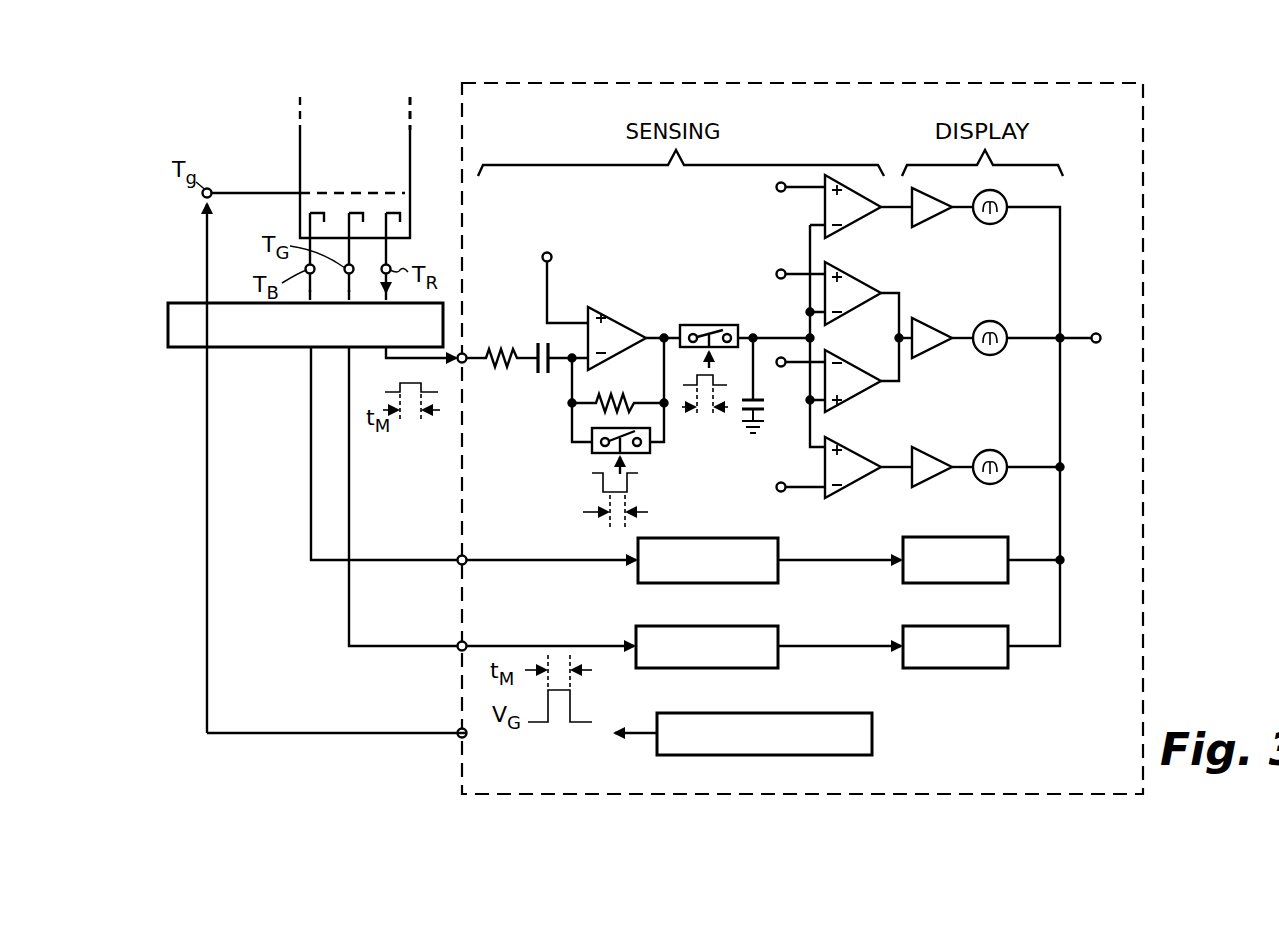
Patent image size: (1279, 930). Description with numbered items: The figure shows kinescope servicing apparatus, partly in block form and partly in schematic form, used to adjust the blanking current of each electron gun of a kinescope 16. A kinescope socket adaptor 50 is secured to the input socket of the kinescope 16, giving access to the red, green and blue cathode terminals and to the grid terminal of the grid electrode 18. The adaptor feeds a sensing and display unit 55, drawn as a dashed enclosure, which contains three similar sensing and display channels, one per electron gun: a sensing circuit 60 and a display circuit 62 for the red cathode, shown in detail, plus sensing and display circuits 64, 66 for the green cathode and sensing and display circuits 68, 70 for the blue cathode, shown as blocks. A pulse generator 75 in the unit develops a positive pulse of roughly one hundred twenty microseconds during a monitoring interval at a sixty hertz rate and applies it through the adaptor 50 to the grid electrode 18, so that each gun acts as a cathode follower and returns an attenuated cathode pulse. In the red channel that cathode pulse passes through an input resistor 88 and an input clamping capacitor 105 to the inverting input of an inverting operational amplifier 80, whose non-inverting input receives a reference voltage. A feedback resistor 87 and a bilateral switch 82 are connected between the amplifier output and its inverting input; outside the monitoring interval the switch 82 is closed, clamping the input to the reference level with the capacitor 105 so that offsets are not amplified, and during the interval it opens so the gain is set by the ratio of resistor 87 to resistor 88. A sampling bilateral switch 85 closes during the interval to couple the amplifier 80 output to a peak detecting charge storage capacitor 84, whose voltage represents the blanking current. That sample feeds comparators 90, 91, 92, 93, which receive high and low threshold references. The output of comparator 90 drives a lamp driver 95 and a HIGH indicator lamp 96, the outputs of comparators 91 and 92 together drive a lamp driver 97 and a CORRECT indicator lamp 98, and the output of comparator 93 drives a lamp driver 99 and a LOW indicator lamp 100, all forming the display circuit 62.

The kinescope 16 is at (300, 150).
The grid electrode 18 is at (382, 196).
The kinescope socket adaptor 50 is at (183, 348).
The sensing and display unit 55 is at (460, 500).
The sensing circuit 60 is at (684, 236).
The display circuit 62 is at (999, 294).
The sensing circuit 64 is at (653, 583).
The display circuit 66 is at (910, 588).
The sensing circuit 68 is at (680, 670).
The display circuit 70 is at (958, 670).
The pulse generator 75 is at (874, 738).
The inverting operational amplifier 80 is at (618, 318).
The bilateral switch 82 is at (650, 455).
The peak detecting charge storage capacitor 84 is at (748, 416).
The sampling bilateral switch 85 is at (706, 325).
The feedback resistor 87 is at (630, 394).
The input resistor 88 is at (496, 343).
The comparator 90 is at (858, 222).
The comparator 91 is at (858, 280).
The comparator 92 is at (846, 372).
The comparator 93 is at (850, 446).
The lamp driver 95 is at (927, 200).
The indicator lamp 96 is at (1003, 204).
The lamp driver 97 is at (924, 328).
The indicator lamp 98 is at (1001, 334).
The lamp driver 99 is at (928, 458).
The indicator lamp 100 is at (1003, 455).
The input clamping capacitor 105 is at (549, 352).